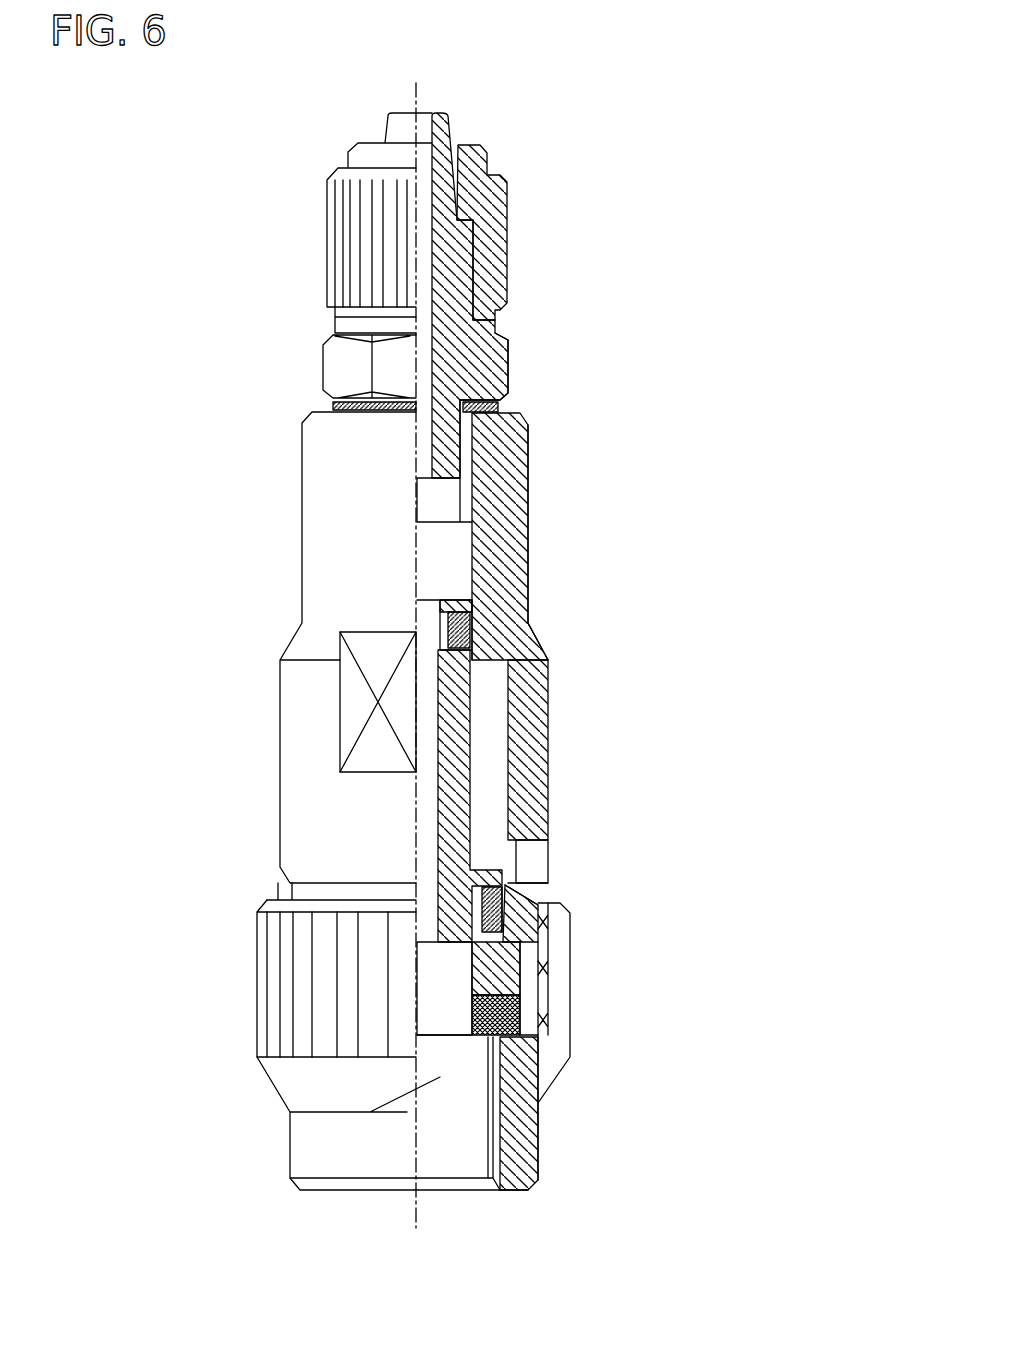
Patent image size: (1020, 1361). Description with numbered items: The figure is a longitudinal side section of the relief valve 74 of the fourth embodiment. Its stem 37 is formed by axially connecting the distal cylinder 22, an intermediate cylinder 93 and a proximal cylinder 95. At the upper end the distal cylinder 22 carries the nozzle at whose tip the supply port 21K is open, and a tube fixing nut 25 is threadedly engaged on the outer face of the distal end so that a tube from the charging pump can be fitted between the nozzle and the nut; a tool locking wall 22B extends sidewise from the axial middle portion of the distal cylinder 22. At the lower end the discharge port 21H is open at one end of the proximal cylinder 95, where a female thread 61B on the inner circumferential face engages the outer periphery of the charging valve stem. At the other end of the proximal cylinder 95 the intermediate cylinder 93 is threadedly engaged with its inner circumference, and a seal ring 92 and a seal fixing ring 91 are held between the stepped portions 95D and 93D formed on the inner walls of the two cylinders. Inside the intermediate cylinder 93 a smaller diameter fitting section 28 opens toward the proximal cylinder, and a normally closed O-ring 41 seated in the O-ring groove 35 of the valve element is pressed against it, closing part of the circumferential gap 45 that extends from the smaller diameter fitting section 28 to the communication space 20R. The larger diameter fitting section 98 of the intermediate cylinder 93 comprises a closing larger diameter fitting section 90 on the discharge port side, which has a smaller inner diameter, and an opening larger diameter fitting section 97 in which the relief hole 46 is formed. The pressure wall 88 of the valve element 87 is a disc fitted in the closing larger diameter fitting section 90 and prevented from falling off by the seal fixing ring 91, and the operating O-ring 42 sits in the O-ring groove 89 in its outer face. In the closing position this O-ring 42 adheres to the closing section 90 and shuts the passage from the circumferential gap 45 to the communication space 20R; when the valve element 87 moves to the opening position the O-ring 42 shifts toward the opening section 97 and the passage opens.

The relief valve 74 is at (609, 76).
The supply port 21K is at (427, 122).
The tube fixing nut 25 is at (497, 228).
The stem 37 is at (523, 344).
The distal cylinder 22 is at (500, 382).
The tool locking wall 22B is at (330, 372).
The intermediate cylinder 93 is at (528, 437).
The smaller diameter fitting section 28 is at (483, 548).
The normally closed O-ring 41 is at (448, 628).
The circumferential gap 45 is at (492, 748).
The O-ring groove 35 is at (440, 652).
The larger diameter fitting section 98 is at (503, 827).
The operating O-ring 42 is at (493, 872).
The relief hole 46 is at (507, 860).
The pressure wall 88 is at (482, 895).
The opening larger diameter fitting section 97 is at (518, 892).
The O-ring groove 89 is at (437, 913).
The closing larger diameter fitting section 90 is at (528, 905).
The stepped portion 93D is at (545, 935).
The seal fixing ring 91 is at (510, 978).
The seal ring 92 is at (525, 1012).
The valve element 87 is at (411, 1006).
The stepped portion 95D is at (525, 1038).
The communication space 20R is at (440, 1077).
The proximal cylinder 95 is at (545, 1093).
The discharge port 21H is at (434, 1160).
The female thread 61B is at (492, 1155).